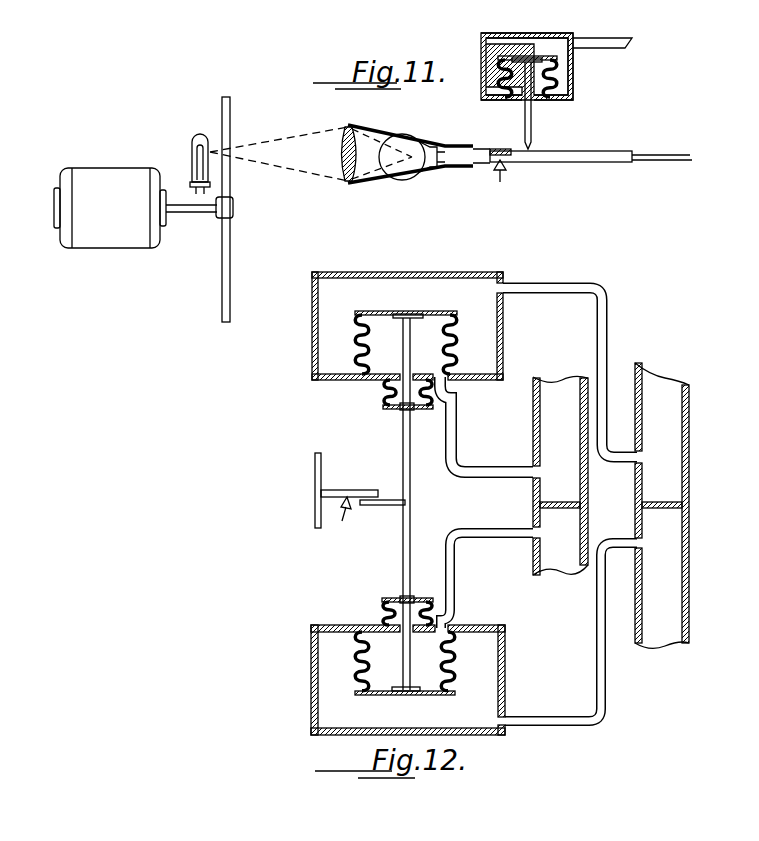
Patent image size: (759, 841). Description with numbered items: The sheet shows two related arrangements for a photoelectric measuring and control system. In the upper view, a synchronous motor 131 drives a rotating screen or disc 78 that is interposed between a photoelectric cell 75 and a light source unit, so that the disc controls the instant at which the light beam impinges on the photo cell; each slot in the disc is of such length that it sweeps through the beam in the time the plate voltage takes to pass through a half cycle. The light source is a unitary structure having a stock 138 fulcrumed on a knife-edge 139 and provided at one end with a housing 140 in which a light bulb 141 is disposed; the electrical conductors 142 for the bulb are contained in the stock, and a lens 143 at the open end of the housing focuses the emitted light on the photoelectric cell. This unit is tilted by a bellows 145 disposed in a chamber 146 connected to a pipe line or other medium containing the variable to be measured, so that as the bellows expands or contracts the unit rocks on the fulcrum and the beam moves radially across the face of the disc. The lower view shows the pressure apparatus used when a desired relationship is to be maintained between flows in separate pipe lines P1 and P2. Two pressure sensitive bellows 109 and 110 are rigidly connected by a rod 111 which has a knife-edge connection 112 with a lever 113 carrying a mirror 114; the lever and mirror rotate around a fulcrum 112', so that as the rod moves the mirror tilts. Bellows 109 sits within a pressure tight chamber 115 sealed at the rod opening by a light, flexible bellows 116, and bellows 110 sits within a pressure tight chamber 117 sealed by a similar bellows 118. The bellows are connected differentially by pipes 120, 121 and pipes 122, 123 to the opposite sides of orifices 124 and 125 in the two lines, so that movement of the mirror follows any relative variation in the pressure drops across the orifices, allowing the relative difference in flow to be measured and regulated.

In FIG. 11, the photoelectric cell 75 is at (190, 158).
In FIG. 11, the rotating screen or disc 78 is at (230, 265).
In FIG. 11, the synchronous motor 131 is at (122, 220).
In FIG. 11, the stock 138 is at (548, 163).
In FIG. 11, the knife-edge 139 is at (509, 176).
In FIG. 11, the housing 140 is at (406, 137).
In FIG. 11, the light bulb 141 is at (407, 179).
In FIG. 11, the electrical conductors 142 is at (672, 161).
In FIG. 11, the lens 143 is at (343, 163).
In FIG. 11, the bellows 145 is at (550, 81).
In FIG. 11, the chamber 146 is at (573, 62).
In FIG. 12, the bellows 109 is at (455, 350).
In FIG. 12, the bellows 110 is at (455, 664).
In FIG. 12, the rod 111 is at (410, 483).
In FIG. 12, the knife-edge connection 112 is at (382, 517).
In FIG. 12, the fulcrum 112' is at (346, 520).
In FIG. 12, the lever 113 is at (366, 492).
In FIG. 12, the mirror 114 is at (315, 517).
In FIG. 12, the pressure tight chamber 115 is at (476, 272).
In FIG. 12, the bellows 116 is at (384, 405).
In FIG. 12, the pressure tight chamber 117 is at (505, 673).
In FIG. 12, the bellows 118 is at (382, 604).
In FIG. 12, the pipe 120 is at (608, 341).
In FIG. 12, the pipe 121 is at (598, 624).
In FIG. 12, the pipe 122 is at (457, 414).
In FIG. 12, the pipe 123 is at (455, 573).
In FIG. 12, the orifice 124 is at (675, 509).
In FIG. 12, the orifice 125 is at (560, 508).
In FIG. 12, the pipe line P1 is at (533, 501).
In FIG. 12, the pipe line P2 is at (689, 498).